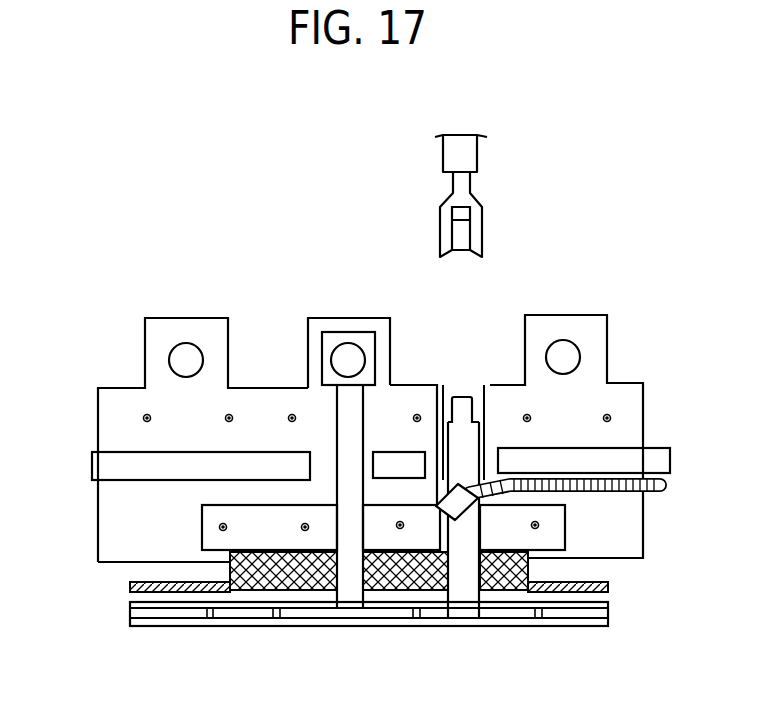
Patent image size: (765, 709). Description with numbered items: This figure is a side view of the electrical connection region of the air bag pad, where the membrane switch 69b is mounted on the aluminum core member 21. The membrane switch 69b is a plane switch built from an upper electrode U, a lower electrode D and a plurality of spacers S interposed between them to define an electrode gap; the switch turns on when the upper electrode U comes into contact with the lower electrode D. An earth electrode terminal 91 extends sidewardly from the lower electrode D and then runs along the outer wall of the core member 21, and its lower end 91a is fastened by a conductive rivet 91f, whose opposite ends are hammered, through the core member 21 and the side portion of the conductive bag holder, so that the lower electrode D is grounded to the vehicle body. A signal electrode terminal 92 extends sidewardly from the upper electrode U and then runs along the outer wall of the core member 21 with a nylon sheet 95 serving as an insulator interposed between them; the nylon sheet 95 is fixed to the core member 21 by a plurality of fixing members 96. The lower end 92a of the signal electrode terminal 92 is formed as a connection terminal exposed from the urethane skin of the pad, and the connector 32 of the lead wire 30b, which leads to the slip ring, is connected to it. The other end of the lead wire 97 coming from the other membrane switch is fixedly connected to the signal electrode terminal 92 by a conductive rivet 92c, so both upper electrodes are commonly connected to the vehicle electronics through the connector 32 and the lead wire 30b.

The core member 21 is at (580, 327).
The lead wire 30b is at (463, 152).
The connector 32 is at (462, 233).
The earth electrode terminal 91 is at (343, 422).
The lower end 91a is at (367, 335).
The conductive rivet 91f is at (346, 352).
The signal electrode terminal 92 is at (465, 472).
The lower end 92a is at (460, 405).
The conductive rivet 92c is at (443, 512).
The nylon sheet 95 is at (552, 532).
The fixing members 96 is at (223, 527).
The lead wire 97 is at (665, 487).
The membrane switch 69b is at (250, 626).
The lower electrode D is at (323, 626).
The upper electrode U is at (387, 626).
The spacers S is at (538, 626).